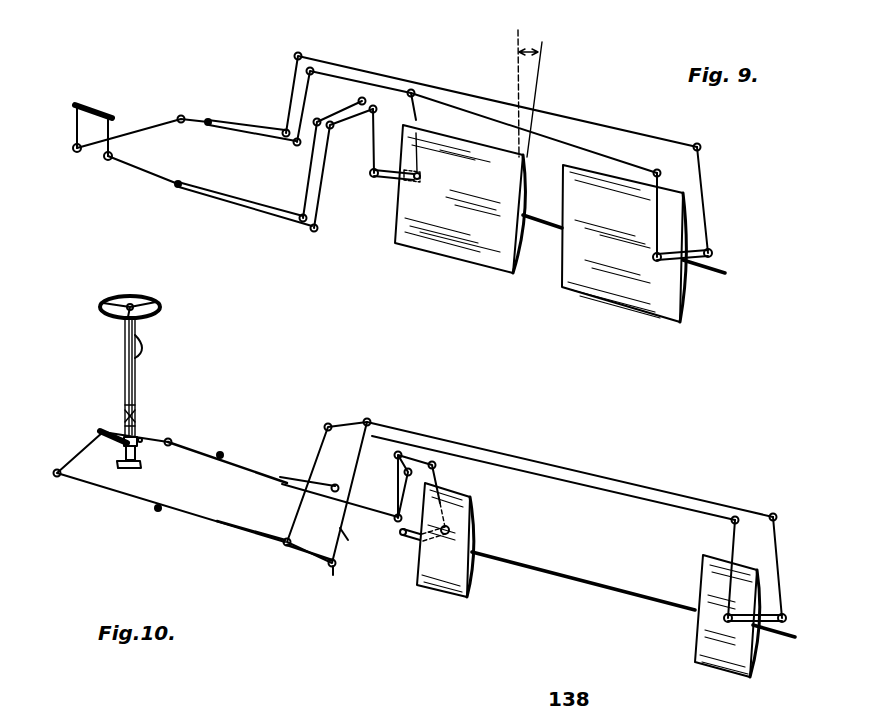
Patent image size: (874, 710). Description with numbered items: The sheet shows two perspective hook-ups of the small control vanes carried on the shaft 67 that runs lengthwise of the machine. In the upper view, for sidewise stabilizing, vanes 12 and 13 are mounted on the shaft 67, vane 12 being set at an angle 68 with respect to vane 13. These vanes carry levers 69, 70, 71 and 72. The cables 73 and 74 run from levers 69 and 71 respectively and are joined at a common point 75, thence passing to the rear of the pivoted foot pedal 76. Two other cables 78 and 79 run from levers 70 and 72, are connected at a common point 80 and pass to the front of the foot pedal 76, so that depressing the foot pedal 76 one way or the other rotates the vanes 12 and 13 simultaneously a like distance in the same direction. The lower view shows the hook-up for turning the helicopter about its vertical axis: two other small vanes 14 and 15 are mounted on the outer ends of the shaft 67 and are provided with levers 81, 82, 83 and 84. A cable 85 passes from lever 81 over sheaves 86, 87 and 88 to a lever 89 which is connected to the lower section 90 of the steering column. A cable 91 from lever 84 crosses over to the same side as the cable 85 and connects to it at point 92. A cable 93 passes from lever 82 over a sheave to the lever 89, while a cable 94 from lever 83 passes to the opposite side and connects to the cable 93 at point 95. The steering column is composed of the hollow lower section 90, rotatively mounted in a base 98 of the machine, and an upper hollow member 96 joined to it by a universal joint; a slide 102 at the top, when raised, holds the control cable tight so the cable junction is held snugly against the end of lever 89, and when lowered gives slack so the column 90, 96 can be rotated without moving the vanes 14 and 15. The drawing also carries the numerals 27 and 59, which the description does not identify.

In FIG. 9, the vane 12 is at (475, 260).
In FIG. 9, the vane 13 is at (650, 320).
In FIG. 10, the small vane 14 is at (435, 587).
In FIG. 10, the small vane 15 is at (735, 680).
In FIG. 9, the pivot 27 is at (87, 117).
In FIG. 10, the pivot 59 is at (348, 540).
In FIG. 9, the shaft 67 is at (540, 235).
In FIG. 10, the shaft 67 is at (643, 605).
In FIG. 9, the angle 68 is at (530, 43).
In FIG. 9, the lever 69 is at (388, 185).
In FIG. 9, the lever 70 is at (418, 180).
In FIG. 9, the lever 71 is at (687, 298).
In FIG. 9, the lever 72 is at (710, 250).
In FIG. 9, the cable 73 is at (326, 170).
In FIG. 9, the cable 74 is at (312, 168).
In FIG. 9, the common point 75 is at (178, 186).
In FIG. 9, the foot pedal 76 is at (97, 102).
In FIG. 9, the cable 78 is at (487, 75).
In FIG. 9, the cable 79 is at (344, 73).
In FIG. 9, the common point 80 is at (208, 122).
In FIG. 10, the lever 81 is at (412, 540).
In FIG. 10, the lever 82 is at (452, 528).
In FIG. 10, the lever 83 is at (750, 667).
In FIG. 10, the lever 84 is at (783, 617).
In FIG. 10, the cable 85 is at (253, 540).
In FIG. 10, the sheave 86 is at (403, 487).
In FIG. 10, the sheave 87 is at (333, 568).
In FIG. 10, the sheave 88 is at (57, 476).
In FIG. 10, the lever 89 is at (115, 440).
In FIG. 10, the lower section of steering column 90 is at (140, 452).
In FIG. 10, the cable 91 is at (332, 425).
In FIG. 10, the point 92 is at (158, 510).
In FIG. 10, the cable 93 is at (287, 483).
In FIG. 10, the cable 94 is at (397, 423).
In FIG. 10, the point 95 is at (220, 455).
In FIG. 10, the hollow member of steering column 96 is at (136, 385).
In FIG. 10, the base 98 is at (127, 465).
In FIG. 10, the slide 102 is at (141, 349).